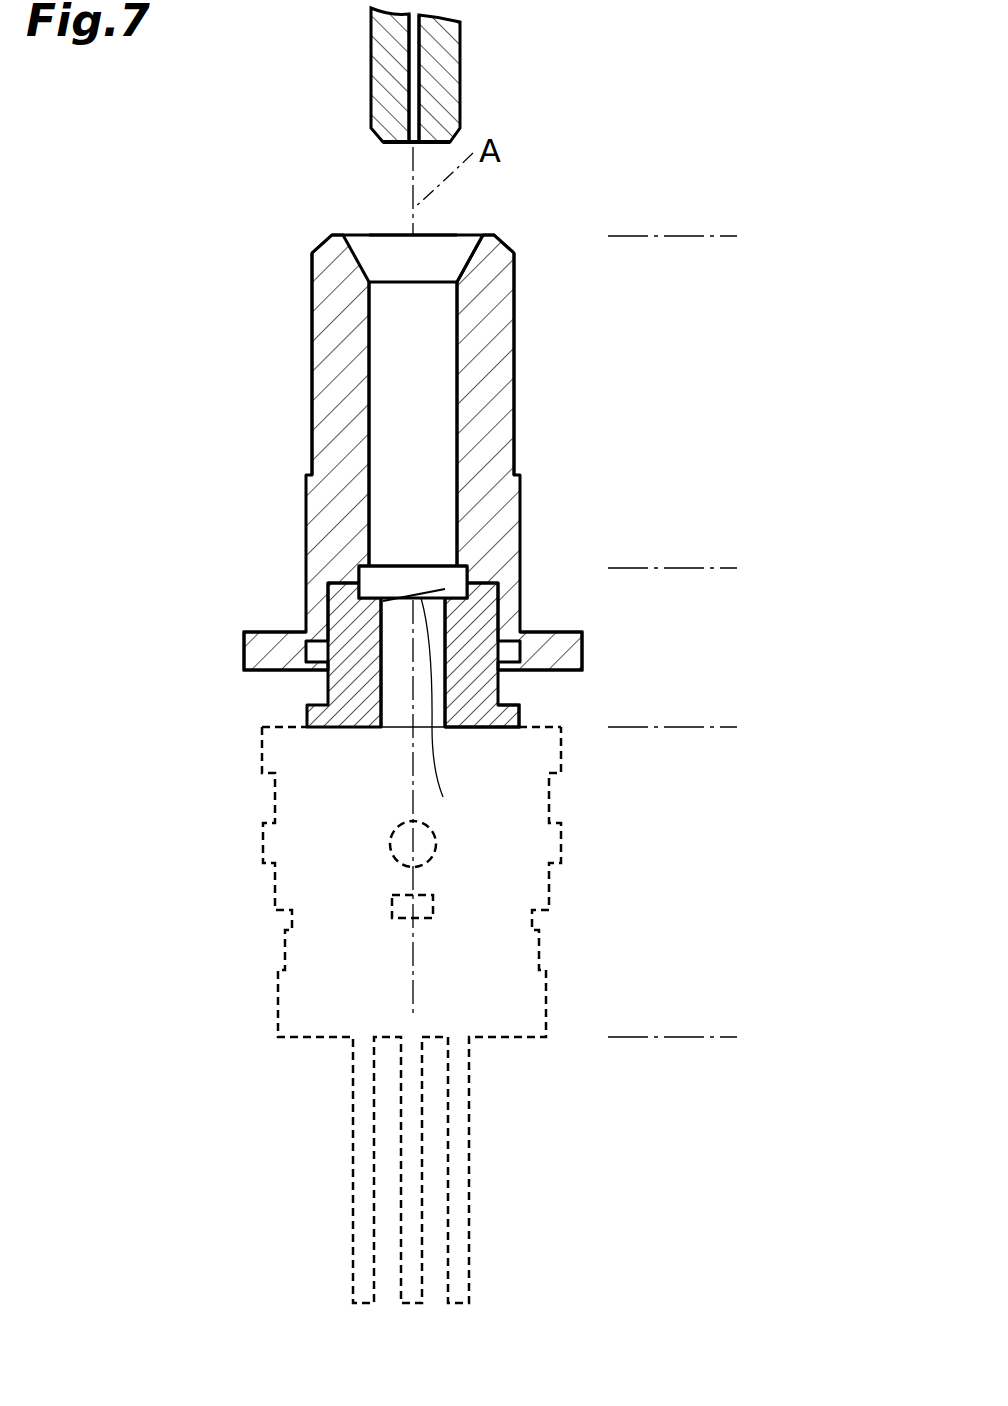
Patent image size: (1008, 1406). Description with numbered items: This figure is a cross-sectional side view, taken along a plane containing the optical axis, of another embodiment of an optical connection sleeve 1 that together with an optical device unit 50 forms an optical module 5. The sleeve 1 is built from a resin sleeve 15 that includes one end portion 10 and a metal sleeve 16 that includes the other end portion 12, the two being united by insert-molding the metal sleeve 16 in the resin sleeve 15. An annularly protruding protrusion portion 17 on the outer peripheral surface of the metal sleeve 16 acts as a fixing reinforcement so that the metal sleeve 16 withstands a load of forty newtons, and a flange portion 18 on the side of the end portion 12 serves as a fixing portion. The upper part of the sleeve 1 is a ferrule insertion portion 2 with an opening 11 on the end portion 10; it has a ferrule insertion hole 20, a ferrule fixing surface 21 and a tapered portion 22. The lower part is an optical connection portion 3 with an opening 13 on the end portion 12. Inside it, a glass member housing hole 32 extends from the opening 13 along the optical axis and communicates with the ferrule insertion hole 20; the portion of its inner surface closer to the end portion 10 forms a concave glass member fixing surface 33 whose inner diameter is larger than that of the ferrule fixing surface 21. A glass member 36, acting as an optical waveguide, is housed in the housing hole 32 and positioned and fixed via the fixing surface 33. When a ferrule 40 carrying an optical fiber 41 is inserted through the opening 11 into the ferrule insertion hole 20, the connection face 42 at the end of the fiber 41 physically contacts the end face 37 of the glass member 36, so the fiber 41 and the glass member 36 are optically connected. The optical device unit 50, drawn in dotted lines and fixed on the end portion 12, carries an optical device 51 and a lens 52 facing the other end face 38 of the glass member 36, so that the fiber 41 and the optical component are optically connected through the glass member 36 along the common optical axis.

The optical connection sleeve 1 is at (785, 383).
The ferrule insertion portion 2 is at (737, 236).
The optical connection portion 3 is at (737, 568).
The optical module 5 is at (847, 891).
The one end portion 10 is at (406, 426).
The opening 11 is at (372, 233).
The other end portion 12 is at (422, 653).
The opening 13 is at (387, 728).
The resin sleeve 15 is at (312, 353).
The metal sleeve 16 is at (328, 687).
The protrusion portion 17 is at (505, 650).
The flange portion 18 is at (519, 718).
The ferrule insertion hole 20 is at (443, 224).
The ferrule fixing surface 21 is at (437, 402).
The tapered portion 22 is at (470, 246).
The glass member housing hole 32 is at (449, 733).
The glass member fixing surface 33 is at (468, 571).
The glass member 36 is at (367, 576).
The end face 37 is at (408, 564).
The other end face 38 is at (449, 715).
The ferrule 40 is at (418, 79).
The optical fiber 41 is at (412, 63).
The connection face 42 is at (413, 143).
The optical device unit 50 is at (737, 727).
The optical device 51 is at (397, 918).
The lens 52 is at (395, 863).